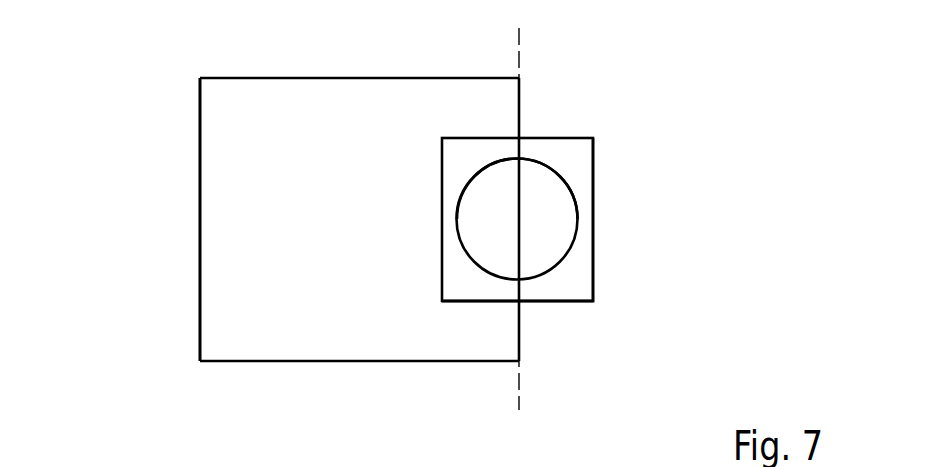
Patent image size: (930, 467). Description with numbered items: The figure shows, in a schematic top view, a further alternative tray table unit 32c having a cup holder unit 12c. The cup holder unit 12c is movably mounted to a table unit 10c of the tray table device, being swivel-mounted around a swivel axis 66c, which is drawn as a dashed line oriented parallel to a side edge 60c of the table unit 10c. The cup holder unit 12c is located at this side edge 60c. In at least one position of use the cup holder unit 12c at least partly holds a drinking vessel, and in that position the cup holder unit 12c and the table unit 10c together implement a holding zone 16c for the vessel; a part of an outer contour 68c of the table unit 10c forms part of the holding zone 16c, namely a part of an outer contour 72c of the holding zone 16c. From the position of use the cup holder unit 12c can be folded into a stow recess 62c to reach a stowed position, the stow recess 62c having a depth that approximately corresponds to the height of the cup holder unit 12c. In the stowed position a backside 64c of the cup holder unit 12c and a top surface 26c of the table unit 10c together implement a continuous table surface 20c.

The table unit 10c is at (180, 193).
The cup holder unit 12c is at (612, 285).
The holding zone 16c is at (558, 219).
The table surface 20c is at (330, 322).
The top surface 26c is at (238, 322).
The tray table unit 32c is at (153, 125).
The side edge 60c is at (520, 92).
The stow recess 62c is at (475, 302).
The backside 64c is at (600, 312).
The swivel axis 66c is at (520, 33).
The outer contour 68c is at (483, 168).
The outer contour of the holding zone 72c is at (562, 172).